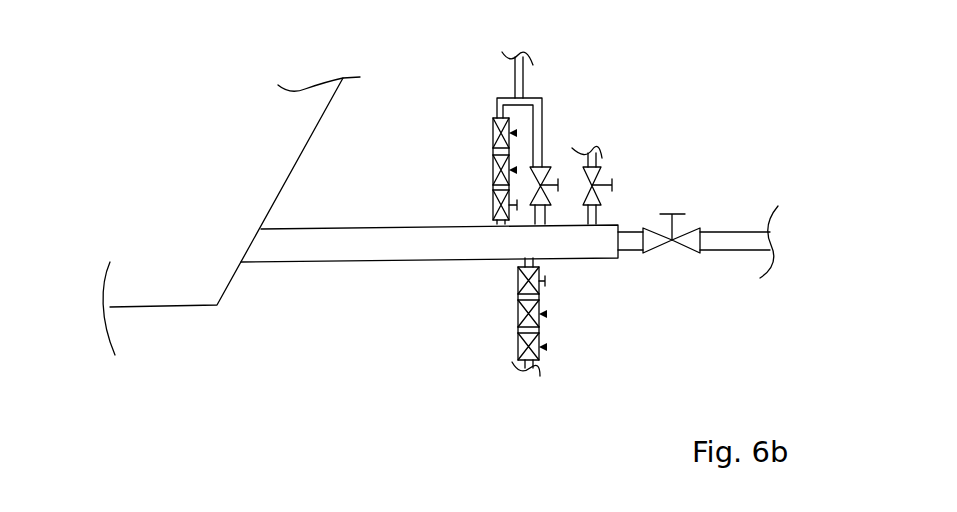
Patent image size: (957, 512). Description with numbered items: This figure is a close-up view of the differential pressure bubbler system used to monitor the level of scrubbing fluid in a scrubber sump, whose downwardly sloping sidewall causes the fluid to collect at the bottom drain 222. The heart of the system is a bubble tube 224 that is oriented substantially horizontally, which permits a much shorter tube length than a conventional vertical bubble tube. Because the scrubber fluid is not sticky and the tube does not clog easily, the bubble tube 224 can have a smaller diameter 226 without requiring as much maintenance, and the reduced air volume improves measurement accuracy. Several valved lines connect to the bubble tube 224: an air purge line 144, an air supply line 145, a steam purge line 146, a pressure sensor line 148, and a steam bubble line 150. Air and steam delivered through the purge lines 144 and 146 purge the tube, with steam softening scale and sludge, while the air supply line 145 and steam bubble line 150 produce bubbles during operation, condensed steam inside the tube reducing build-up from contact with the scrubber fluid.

The bottom drain 222 is at (155, 308).
The bubble tube 224 is at (380, 261).
The smaller diameter 226 is at (440, 180).
The air purge line 144 is at (562, 98).
The air supply line 145 is at (470, 118).
The steam purge line 146 is at (678, 270).
The pressure sensor line 148 is at (626, 146).
The steam bubble line 150 is at (574, 334).